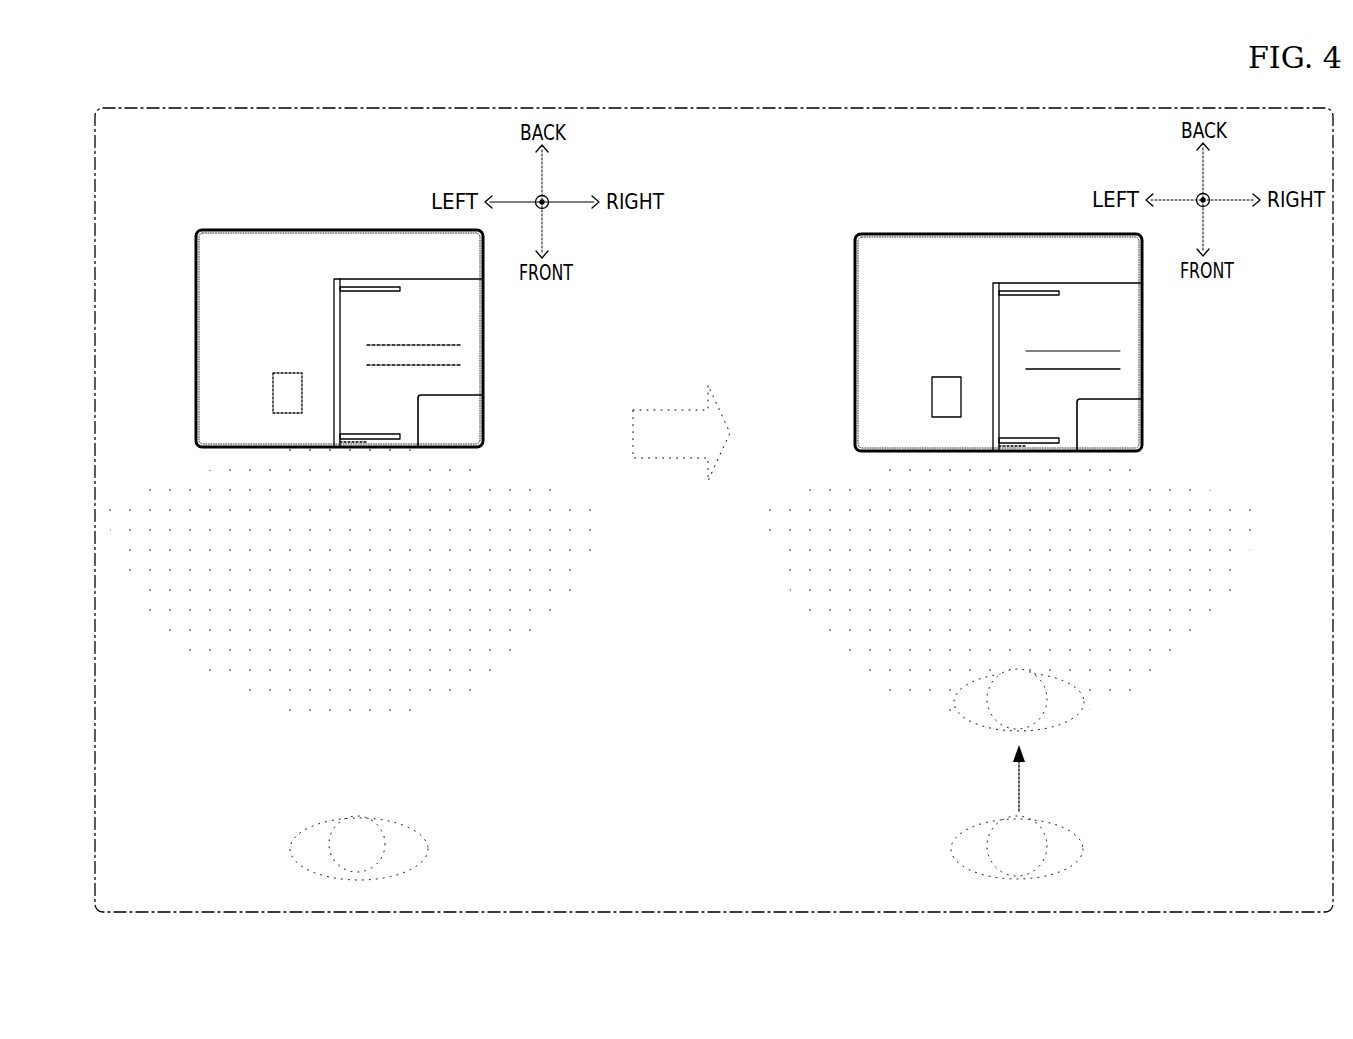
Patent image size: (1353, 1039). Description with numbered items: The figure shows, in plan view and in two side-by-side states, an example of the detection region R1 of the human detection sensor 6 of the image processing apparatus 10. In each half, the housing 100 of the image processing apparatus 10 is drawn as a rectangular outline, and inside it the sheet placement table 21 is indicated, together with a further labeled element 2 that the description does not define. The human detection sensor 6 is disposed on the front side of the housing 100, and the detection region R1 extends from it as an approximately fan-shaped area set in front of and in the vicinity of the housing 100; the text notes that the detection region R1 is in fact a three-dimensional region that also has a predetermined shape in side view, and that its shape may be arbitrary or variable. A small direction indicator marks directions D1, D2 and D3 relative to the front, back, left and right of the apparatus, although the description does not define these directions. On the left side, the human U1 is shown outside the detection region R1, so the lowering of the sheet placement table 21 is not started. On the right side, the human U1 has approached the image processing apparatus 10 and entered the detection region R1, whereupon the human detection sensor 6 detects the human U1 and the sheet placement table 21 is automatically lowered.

The image processing apparatus 10 is at (232, 228).
The housing 100 is at (318, 229).
The displayed image 2 is at (239, 350).
The sheet placement table 21 is at (452, 353).
The human detection sensor 6 is at (336, 441).
The detection region R1 is at (545, 642).
The human U1 is at (290, 850).
The first direction D1 is at (537, 210).
The second direction D2 is at (537, 194).
The third direction D3 is at (572, 211).